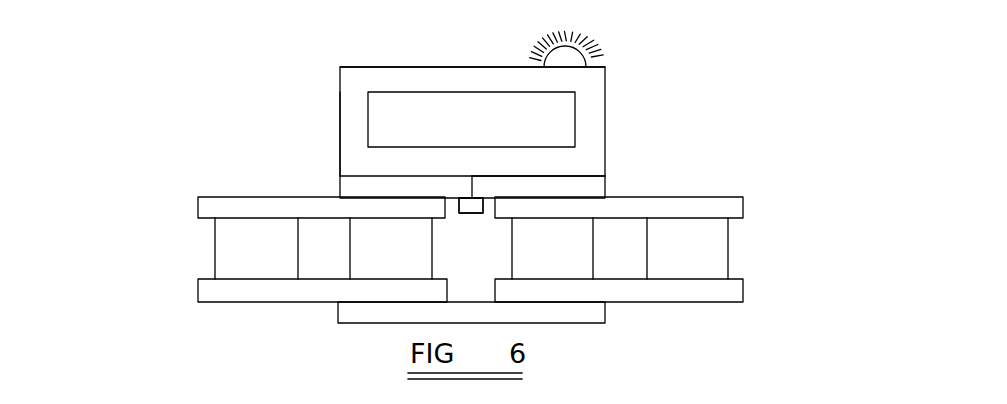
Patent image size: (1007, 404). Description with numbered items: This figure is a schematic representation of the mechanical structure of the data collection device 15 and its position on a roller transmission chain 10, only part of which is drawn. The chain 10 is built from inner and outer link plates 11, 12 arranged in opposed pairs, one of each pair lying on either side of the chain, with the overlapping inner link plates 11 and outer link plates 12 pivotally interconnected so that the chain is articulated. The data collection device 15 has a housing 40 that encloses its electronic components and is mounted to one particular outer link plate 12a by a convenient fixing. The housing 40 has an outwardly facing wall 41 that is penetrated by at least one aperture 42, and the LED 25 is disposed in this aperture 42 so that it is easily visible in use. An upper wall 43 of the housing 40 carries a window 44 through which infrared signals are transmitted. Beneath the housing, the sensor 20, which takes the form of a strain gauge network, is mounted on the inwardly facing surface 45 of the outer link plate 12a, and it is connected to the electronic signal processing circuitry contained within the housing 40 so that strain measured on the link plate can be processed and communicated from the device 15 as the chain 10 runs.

The transmission chain 10 is at (188, 245).
The inner link plate 11 is at (208, 198).
The outer link plate 12 is at (597, 312).
The outer link plate 12a is at (580, 188).
The data collection device 15 is at (292, 91).
The sensor 20 is at (464, 205).
The LED 25 is at (590, 63).
The housing 40 is at (605, 82).
The outwardly facing wall 41 is at (377, 67).
The aperture 42 is at (576, 60).
The upper wall 43 is at (353, 143).
The window 44 is at (547, 120).
The inwardly facing surface 45 is at (455, 200).